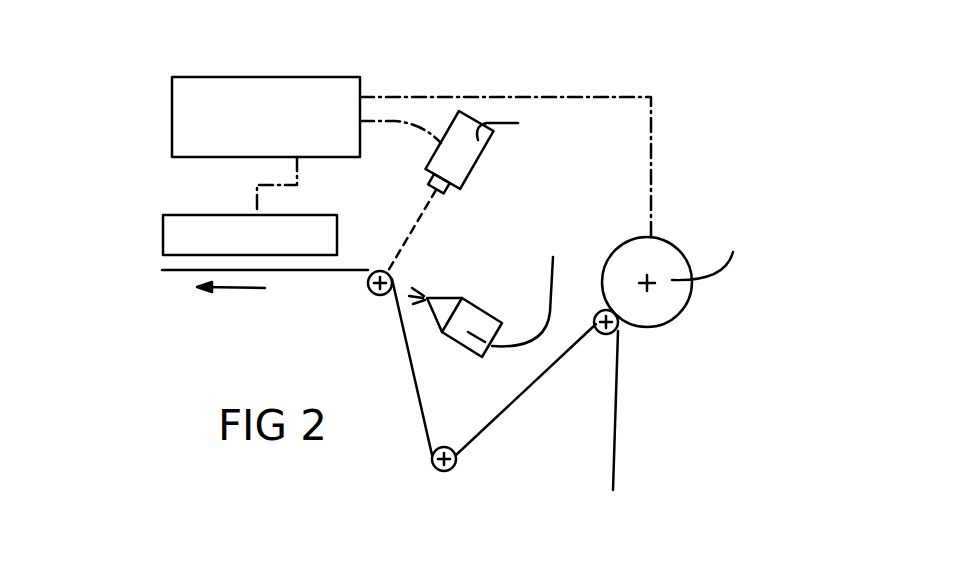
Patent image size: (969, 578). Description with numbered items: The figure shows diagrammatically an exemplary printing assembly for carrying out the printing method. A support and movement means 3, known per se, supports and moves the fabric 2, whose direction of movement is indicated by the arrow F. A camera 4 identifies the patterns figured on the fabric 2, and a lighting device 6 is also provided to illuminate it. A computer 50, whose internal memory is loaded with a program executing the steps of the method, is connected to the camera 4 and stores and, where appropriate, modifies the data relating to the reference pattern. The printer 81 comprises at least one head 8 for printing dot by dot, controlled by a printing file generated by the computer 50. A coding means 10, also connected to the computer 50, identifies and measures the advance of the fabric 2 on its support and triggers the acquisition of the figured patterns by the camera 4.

The fabric 2 is at (617, 448).
The support and movement means 3 is at (366, 300).
The camera 4 is at (462, 160).
The lighting device 6 is at (492, 304).
The head 8 is at (163, 227).
The coding means 10 is at (662, 300).
The computer 50 is at (183, 132).
The printer 81 is at (208, 207).